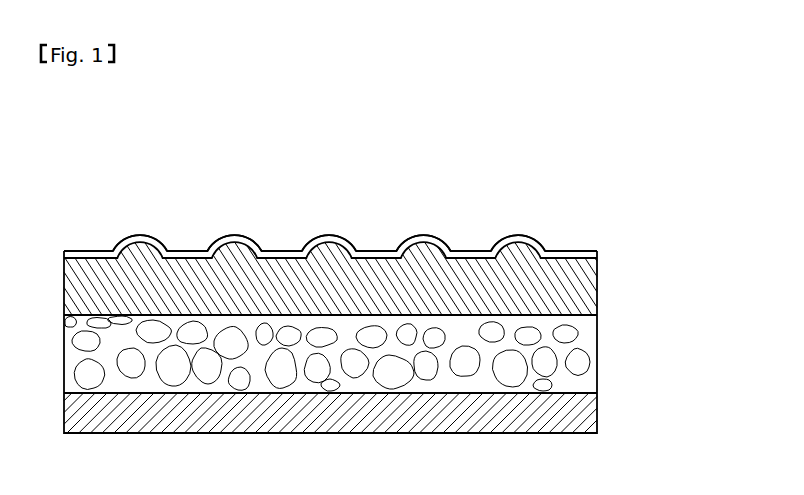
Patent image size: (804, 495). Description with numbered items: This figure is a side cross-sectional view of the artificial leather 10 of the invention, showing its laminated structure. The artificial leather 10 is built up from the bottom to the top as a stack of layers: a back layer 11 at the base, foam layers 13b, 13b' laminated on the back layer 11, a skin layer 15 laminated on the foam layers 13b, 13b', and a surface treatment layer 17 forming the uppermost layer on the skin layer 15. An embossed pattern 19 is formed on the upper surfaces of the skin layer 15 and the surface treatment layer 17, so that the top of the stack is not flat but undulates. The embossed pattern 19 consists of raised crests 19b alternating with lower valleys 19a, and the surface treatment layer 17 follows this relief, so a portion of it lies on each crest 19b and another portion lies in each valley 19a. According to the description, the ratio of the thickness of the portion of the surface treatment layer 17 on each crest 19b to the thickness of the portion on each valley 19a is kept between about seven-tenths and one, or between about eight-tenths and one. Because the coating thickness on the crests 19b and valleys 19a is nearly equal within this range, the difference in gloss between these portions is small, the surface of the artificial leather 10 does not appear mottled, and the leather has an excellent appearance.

The artificial leather 10 is at (490, 203).
The back layer 11 is at (598, 410).
The foam layer 13b is at (391, 355).
The foam layer 13b' is at (421, 353).
The skin layer 15 is at (598, 280).
The surface treatment layer 17 is at (578, 251).
The embossed pattern 19 is at (337, 233).
The valley 19a is at (187, 251).
The crest 19b is at (233, 235).